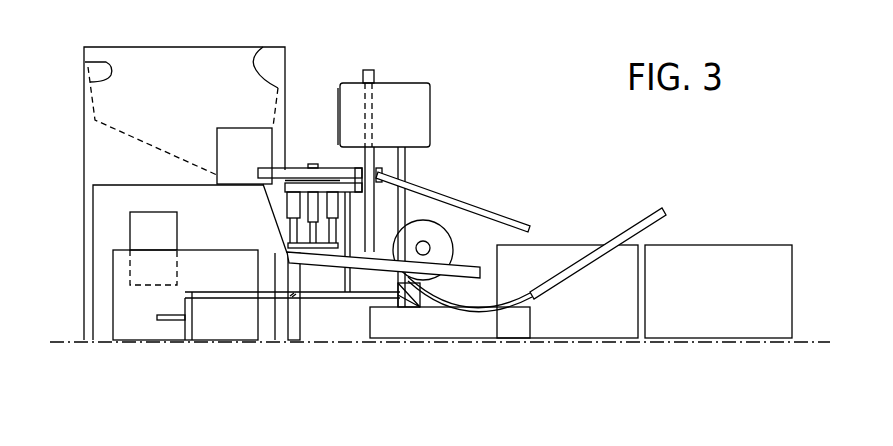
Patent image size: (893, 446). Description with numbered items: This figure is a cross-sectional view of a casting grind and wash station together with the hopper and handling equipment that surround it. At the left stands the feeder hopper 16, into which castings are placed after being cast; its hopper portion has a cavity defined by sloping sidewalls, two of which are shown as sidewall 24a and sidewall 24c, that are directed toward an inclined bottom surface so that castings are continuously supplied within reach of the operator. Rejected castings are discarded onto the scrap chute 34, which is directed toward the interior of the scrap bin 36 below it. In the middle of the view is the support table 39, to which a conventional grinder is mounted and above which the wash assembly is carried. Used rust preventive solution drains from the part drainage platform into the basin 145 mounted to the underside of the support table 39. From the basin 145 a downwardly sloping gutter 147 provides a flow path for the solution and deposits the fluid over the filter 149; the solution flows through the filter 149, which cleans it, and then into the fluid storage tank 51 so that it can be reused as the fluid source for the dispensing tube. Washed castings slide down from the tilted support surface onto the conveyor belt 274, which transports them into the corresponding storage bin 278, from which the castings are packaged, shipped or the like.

The feeder hopper 16 is at (211, 38).
The sloping sidewall 24a is at (85, 62).
The sloping sidewall 24c is at (263, 47).
The support table 39 is at (300, 168).
The basin 145 is at (283, 209).
The scrap chute 34 is at (163, 240).
The scrap bin 36 is at (131, 322).
The downwardly sloping gutter 147 is at (378, 262).
The conveyor belt 274 is at (457, 192).
The storage bin 278 is at (593, 245).
The filter 149 is at (478, 302).
The fluid storage tank 51 is at (440, 312).